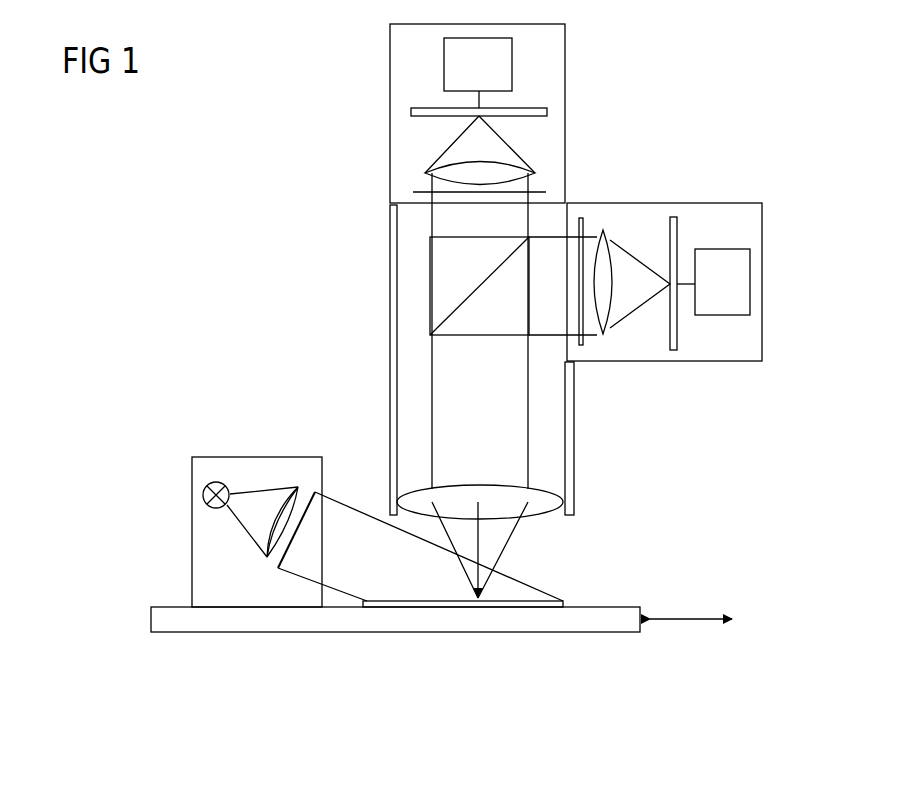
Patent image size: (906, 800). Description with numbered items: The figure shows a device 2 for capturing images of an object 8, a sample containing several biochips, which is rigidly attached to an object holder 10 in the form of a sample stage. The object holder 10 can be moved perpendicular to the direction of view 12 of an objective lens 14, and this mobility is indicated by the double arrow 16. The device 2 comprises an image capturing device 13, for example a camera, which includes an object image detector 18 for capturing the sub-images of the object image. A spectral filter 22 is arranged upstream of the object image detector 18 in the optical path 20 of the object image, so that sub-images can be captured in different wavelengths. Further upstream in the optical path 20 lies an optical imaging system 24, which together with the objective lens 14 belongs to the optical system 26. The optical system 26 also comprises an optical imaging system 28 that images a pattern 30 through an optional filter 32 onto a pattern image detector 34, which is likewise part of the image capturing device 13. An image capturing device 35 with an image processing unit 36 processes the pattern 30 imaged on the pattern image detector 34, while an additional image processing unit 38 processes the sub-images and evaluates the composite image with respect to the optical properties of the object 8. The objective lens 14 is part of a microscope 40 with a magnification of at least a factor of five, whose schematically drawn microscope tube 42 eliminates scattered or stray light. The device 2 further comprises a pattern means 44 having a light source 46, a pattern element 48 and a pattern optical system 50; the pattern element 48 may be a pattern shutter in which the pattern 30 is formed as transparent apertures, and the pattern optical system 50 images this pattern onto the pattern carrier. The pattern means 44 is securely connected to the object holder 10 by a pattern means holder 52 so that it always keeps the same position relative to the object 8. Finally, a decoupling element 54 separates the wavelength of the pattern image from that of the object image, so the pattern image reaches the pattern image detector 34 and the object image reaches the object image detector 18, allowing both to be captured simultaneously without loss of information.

The device 2 is at (606, 116).
The object 8 is at (427, 610).
The object holder 10 is at (487, 625).
The direction of view 12 is at (480, 542).
The image capturing device 13 is at (567, 72).
The objective lens 14 is at (547, 510).
The double arrow 16 is at (695, 618).
The object image detector 18 is at (411, 112).
The optical path 20 is at (465, 141).
The spectral filter 22 is at (413, 193).
The optical imaging system 24 is at (453, 172).
The optical system 26 is at (584, 190).
The optical imaging system 28 is at (605, 310).
The pattern 30 is at (345, 593).
The filter 32 is at (582, 345).
The pattern image detector 34 is at (678, 333).
The image capturing device 35 is at (714, 203).
The image processing unit 36 is at (738, 308).
The image processing unit 38 is at (460, 62).
The microscope 40 is at (589, 502).
The microscope tube 42 is at (575, 435).
The pattern means 44 is at (221, 453).
The light source 46 is at (203, 495).
The pattern element 48 is at (308, 513).
The pattern optical system 50 is at (290, 505).
The pattern means holder 52 is at (192, 565).
The decoupling element 54 is at (438, 284).